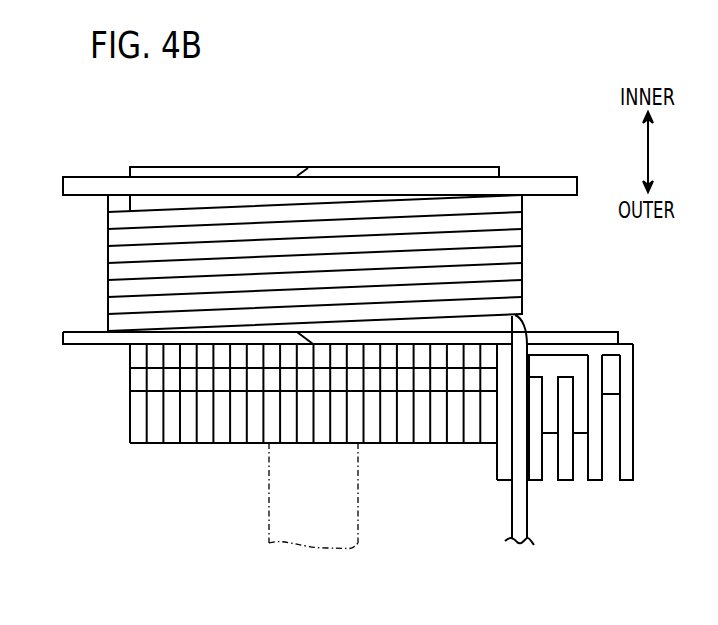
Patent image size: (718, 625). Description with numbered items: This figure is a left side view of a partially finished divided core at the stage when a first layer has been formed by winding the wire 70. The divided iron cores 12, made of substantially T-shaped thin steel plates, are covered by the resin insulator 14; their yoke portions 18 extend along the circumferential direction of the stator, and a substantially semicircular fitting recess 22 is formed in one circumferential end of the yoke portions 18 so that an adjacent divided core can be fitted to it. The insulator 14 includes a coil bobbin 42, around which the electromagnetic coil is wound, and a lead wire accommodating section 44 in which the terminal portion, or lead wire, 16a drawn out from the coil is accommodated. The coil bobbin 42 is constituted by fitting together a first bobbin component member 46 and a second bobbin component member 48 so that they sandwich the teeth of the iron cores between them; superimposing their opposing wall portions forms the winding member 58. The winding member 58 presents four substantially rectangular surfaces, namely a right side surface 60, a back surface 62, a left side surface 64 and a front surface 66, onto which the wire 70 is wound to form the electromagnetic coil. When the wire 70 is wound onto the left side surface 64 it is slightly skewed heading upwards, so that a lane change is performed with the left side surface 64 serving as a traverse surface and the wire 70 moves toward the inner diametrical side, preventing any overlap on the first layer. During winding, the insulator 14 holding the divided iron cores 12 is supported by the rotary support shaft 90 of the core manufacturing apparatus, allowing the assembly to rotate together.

The divided iron cores 12 is at (244, 455).
The insulator 14 is at (650, 407).
The terminal portion (lead wire) 16a is at (516, 512).
The yoke portions 18 is at (158, 434).
The fitting recess 22 is at (137, 378).
The coil bobbin 42 is at (102, 176).
The lead wire accommodating section 44 is at (636, 368).
The first bobbin component member 46 is at (246, 157).
The second bobbin component member 48 is at (390, 157).
The winding member 58 is at (457, 274).
The right side surface 60 is at (450, 222).
The back surface 62 is at (108, 291).
The left side surface 64 is at (163, 203).
The front surface 66 is at (523, 235).
The wire 70 is at (108, 253).
The rotary support shaft 90 is at (358, 517).